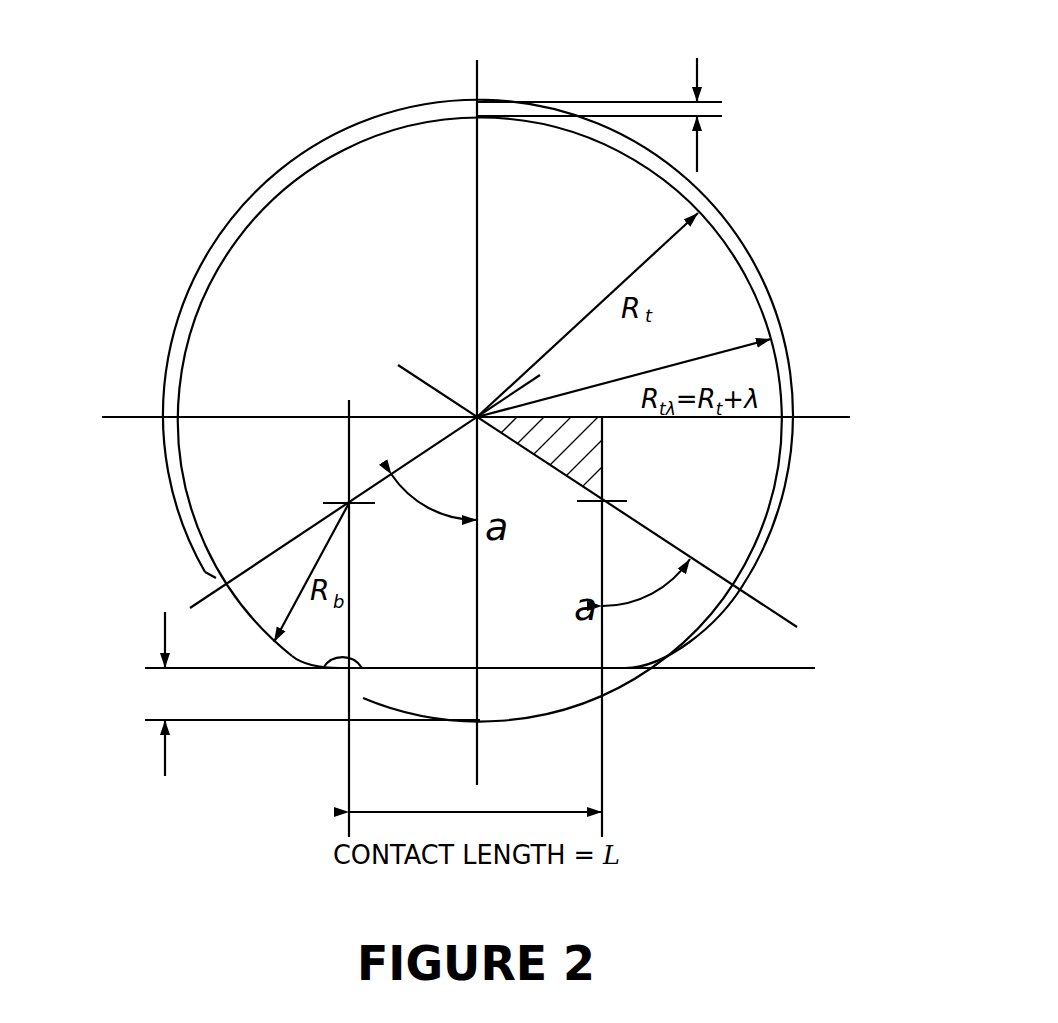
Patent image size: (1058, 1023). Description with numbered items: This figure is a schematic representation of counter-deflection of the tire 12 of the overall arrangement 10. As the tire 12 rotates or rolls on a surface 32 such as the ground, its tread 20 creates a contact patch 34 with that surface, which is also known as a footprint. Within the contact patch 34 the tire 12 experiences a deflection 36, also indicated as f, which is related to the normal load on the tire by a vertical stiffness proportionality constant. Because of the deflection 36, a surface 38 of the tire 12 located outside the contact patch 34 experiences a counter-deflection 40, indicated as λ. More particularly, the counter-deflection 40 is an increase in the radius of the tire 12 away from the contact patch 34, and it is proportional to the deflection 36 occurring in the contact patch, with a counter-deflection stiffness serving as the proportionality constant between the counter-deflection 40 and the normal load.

The tire 10 is at (118, 745).
The tire 12 is at (241, 201).
The tread 20 is at (186, 287).
The surface 32 is at (757, 668).
The contact patch 34 is at (325, 668).
The deflection 36 is at (82, 686).
The surface of the tire 38 is at (472, 104).
The counter-deflection 40 is at (890, 103).